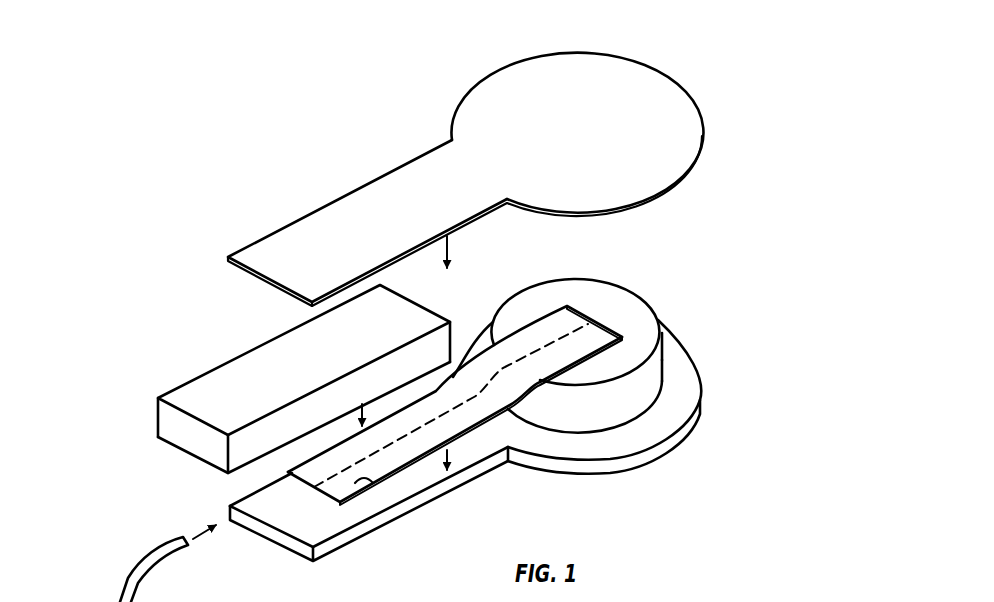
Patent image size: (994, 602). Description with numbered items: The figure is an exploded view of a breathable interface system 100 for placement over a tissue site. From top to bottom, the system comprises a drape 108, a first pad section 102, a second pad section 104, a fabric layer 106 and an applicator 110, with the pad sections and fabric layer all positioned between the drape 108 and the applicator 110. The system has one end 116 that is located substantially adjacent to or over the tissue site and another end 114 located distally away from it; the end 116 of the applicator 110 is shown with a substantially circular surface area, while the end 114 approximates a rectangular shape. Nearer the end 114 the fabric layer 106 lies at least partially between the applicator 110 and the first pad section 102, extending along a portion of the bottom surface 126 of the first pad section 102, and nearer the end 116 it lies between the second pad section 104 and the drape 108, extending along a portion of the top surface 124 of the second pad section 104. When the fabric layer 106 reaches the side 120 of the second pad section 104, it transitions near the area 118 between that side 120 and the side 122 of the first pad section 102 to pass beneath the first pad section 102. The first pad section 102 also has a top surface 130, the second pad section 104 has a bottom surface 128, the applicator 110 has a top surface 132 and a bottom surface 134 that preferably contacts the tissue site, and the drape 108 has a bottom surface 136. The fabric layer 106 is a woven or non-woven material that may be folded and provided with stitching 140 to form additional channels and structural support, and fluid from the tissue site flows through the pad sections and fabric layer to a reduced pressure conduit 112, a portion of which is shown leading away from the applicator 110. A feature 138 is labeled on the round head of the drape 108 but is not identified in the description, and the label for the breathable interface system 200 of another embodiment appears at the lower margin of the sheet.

The breathable interface system 100 is at (725, 58).
The first pad section 102 is at (158, 416).
The second pad section 104 is at (655, 312).
The fabric layer 106 is at (390, 446).
The drape 108 is at (262, 247).
The applicator 110 is at (329, 549).
The reduced pressure conduit 112 is at (141, 560).
The end 114 is at (263, 556).
The end 116 is at (716, 379).
The area 118 is at (514, 481).
The side 120 is at (652, 370).
The side 122 is at (454, 333).
The top surface 124 is at (593, 279).
The bottom surface 126 is at (188, 482).
The bottom surface 128 is at (643, 426).
The top surface 130 is at (249, 361).
The top surface 132 is at (673, 340).
The bottom surface 134 is at (644, 476).
The bottom surface 136 is at (256, 291).
The round head of top cover plate 138 is at (495, 87).
The stitching 140 is at (413, 453).
The breathable interface system 200 is at (636, 599).